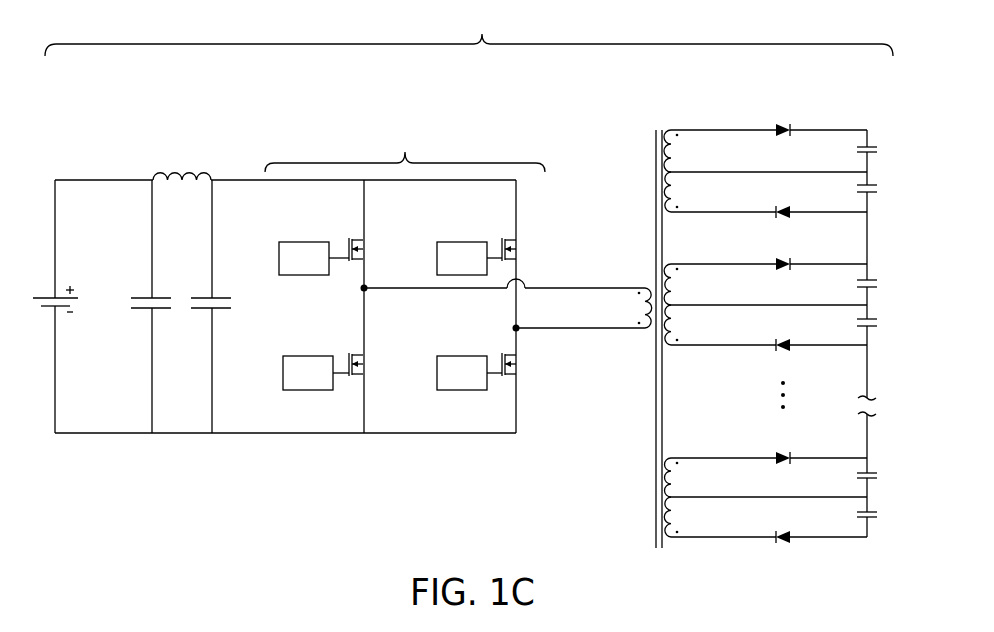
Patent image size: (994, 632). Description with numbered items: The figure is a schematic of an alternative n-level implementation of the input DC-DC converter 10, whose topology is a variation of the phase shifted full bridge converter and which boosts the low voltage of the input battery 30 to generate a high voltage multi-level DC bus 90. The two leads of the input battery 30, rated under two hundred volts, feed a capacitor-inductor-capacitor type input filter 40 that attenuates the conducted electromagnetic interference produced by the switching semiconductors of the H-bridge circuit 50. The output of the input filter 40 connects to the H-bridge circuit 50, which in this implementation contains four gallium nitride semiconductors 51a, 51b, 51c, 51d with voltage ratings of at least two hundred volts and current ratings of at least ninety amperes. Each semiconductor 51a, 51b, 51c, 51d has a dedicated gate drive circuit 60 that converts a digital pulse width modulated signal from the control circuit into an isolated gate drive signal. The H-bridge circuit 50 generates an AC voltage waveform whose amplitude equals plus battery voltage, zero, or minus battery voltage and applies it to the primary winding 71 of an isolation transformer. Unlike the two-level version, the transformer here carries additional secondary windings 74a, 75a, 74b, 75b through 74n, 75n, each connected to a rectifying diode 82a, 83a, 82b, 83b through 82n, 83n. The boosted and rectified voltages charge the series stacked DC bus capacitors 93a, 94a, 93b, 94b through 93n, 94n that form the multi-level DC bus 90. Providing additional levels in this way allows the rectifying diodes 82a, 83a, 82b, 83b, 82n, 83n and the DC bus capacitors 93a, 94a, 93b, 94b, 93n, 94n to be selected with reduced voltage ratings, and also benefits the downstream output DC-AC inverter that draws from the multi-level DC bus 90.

The input DC-DC converter 10 is at (469, 29).
The input battery 30 is at (50, 293).
The input filter 40 is at (174, 170).
The H-bridge circuit 50 is at (405, 277).
The gate drive circuit 60 is at (300, 241).
The semiconductor 51a is at (366, 252).
The semiconductor 51b is at (519, 252).
The semiconductor 51c is at (366, 367).
The semiconductor 51d is at (519, 367).
The primary winding 71 is at (640, 312).
The secondary winding 74a is at (676, 145).
The secondary winding 75a is at (676, 188).
The secondary winding 74b is at (676, 280).
The secondary winding 75b is at (676, 320).
The secondary winding 74n is at (676, 475).
The secondary winding 75n is at (676, 515).
The rectifying diode 82a is at (776, 122).
The rectifying diode 83a is at (786, 216).
The rectifying diode 82b is at (778, 256).
The rectifying diode 83b is at (786, 349).
The rectifying diode 82n is at (778, 450).
The rectifying diode 83n is at (786, 541).
The multi-level DC bus 90 is at (884, 315).
The DC bus capacitor 93a is at (880, 150).
The DC bus capacitor 94a is at (878, 188).
The DC bus capacitor 93b is at (878, 282).
The DC bus capacitor 94b is at (878, 322).
The DC bus capacitor 93n is at (880, 478).
The DC bus capacitor 94n is at (878, 515).